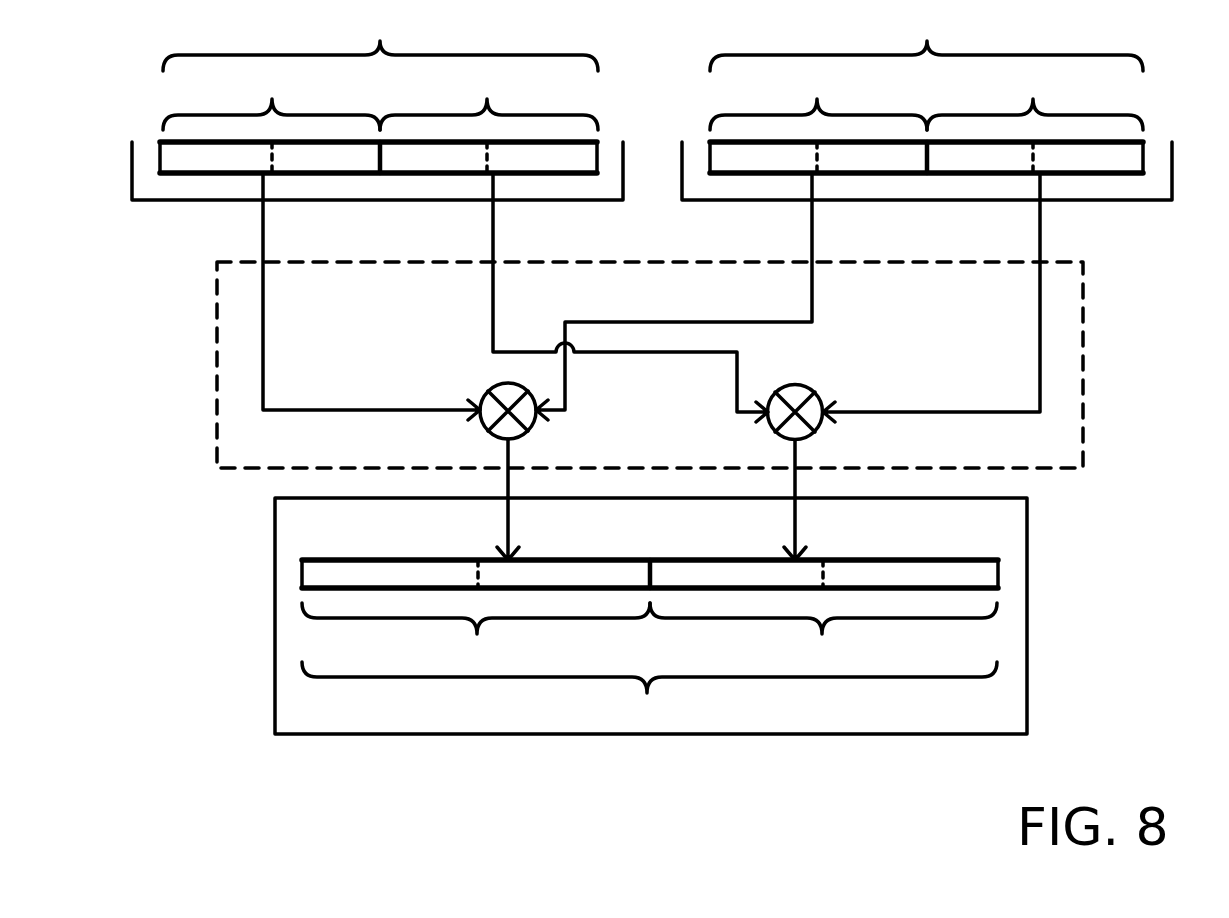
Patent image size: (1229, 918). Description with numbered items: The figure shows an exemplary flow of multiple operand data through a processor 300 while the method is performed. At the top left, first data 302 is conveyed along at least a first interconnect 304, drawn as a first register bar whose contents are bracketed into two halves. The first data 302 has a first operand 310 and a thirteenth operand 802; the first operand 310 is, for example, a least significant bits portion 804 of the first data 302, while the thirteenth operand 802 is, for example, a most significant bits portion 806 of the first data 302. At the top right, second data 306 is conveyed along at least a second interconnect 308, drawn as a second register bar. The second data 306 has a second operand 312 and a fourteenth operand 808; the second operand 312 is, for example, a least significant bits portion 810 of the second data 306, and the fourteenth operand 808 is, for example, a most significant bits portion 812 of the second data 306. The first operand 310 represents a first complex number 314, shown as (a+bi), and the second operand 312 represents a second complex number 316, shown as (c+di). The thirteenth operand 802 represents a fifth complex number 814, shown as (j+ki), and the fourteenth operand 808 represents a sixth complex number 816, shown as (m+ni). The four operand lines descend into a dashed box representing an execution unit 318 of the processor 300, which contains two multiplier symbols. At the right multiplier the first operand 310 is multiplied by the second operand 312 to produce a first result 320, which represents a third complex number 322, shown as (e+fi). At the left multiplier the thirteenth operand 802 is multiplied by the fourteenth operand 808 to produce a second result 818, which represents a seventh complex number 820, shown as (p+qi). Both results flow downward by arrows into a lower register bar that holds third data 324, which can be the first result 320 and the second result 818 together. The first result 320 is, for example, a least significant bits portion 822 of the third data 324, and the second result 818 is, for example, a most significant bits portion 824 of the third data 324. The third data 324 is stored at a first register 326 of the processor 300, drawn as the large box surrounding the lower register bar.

The processor 300 is at (128, 587).
The first data 302 is at (380, 40).
The first interconnect 304 is at (621, 200).
The second data 306 is at (926, 40).
The second interconnect 308 is at (1170, 200).
The first operand 310 is at (496, 298).
The second operand 312 is at (1037, 331).
The first complex number 314 is at (432, 348).
The second complex number 316 is at (945, 392).
The execution unit 318 is at (650, 365).
The first result 320 is at (800, 536).
The third complex number 322 is at (958, 536).
The third data 324 is at (649, 692).
The first register 326 is at (998, 737).
The thirteenth operand 802 is at (268, 307).
The least significant bits portion of first data 804 is at (489, 99).
The most significant bits portion of first data 806 is at (271, 98).
The fourteenth operand 808 is at (815, 300).
The least significant bits portion of second data 810 is at (1035, 98).
The most significant bits portion of second data 812 is at (818, 98).
The fifth complex number 814 is at (308, 383).
The sixth complex number 816 is at (810, 357).
The second result 818 is at (512, 526).
The seventh complex number 820 is at (612, 541).
The least significant bits portion of third data 822 is at (823, 635).
The most significant bits portion of third data 824 is at (476, 635).